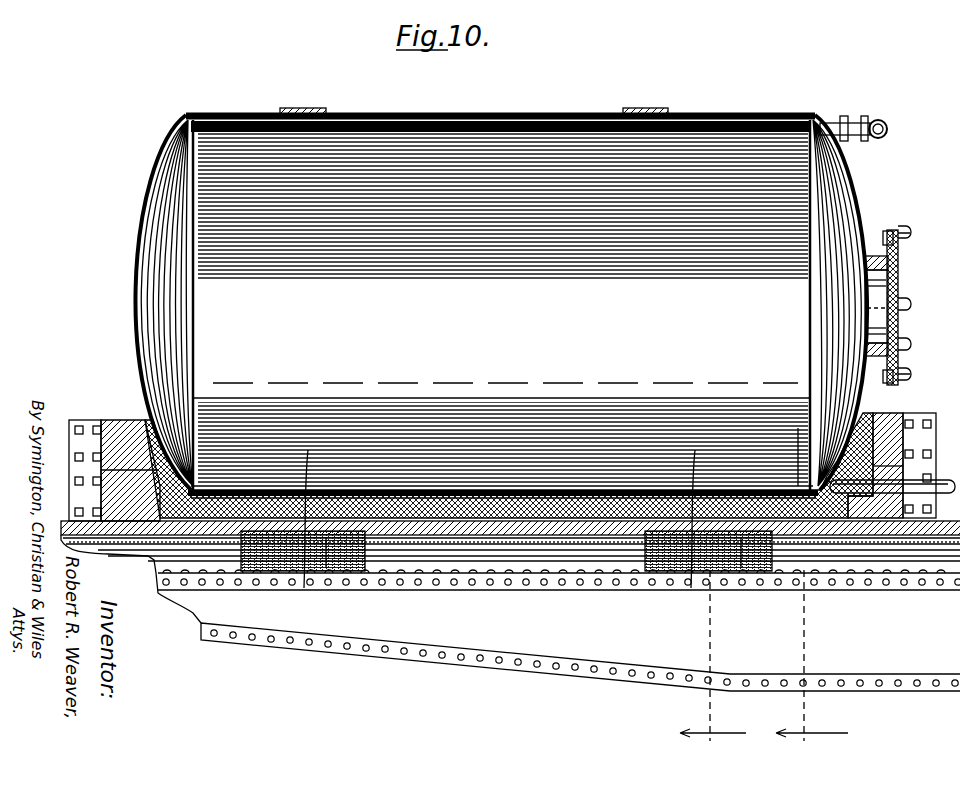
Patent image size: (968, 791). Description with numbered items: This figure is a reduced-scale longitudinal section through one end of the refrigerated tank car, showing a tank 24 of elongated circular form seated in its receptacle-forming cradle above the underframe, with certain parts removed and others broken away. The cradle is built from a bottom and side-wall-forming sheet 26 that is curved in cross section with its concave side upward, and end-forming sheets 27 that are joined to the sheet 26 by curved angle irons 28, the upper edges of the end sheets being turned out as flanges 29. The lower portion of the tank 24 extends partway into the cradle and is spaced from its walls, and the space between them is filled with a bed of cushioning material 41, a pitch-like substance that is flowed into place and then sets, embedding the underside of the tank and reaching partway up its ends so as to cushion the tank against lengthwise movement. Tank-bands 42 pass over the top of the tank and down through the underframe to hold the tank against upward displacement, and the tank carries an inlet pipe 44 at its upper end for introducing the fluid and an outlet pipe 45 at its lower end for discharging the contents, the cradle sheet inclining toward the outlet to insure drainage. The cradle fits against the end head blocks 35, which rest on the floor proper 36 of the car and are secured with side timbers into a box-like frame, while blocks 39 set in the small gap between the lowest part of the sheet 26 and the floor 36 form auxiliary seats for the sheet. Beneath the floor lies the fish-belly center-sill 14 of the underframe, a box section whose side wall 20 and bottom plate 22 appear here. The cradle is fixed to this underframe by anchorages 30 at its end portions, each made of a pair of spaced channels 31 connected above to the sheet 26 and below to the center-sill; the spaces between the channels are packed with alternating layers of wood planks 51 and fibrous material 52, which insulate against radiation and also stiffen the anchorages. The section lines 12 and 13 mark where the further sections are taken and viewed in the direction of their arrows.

The section line 12 is at (812, 745).
The section line 13 is at (713, 745).
The center-sill 14 is at (559, 606).
The side wall of center-sill 20 is at (757, 655).
The bottom plate portion of center-sill 22 is at (892, 684).
The tank 24 is at (486, 110).
The bottom and side-wall-forming sheet 26 is at (605, 490).
The end-forming sheet 27 is at (165, 440).
The curved angle iron 28 is at (186, 474).
The flange 29 is at (100, 410).
The anchorage 30 is at (766, 482).
The channel 31 is at (504, 506).
The head block 35 is at (82, 416).
The floor 36 is at (137, 523).
The block 39 is at (225, 487).
The bed of cushioning material 41 is at (172, 457).
The tank-band 42 is at (294, 103).
The inlet pipe 44 is at (868, 110).
The outlet pipe 45 is at (940, 473).
The layer of wood 51 is at (323, 563).
The layer of fibrous material 52 is at (268, 563).